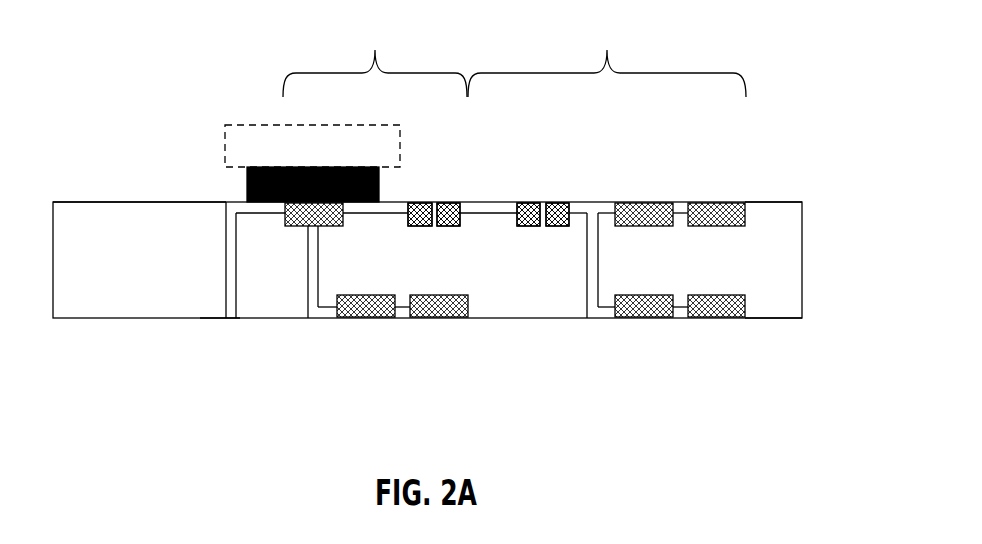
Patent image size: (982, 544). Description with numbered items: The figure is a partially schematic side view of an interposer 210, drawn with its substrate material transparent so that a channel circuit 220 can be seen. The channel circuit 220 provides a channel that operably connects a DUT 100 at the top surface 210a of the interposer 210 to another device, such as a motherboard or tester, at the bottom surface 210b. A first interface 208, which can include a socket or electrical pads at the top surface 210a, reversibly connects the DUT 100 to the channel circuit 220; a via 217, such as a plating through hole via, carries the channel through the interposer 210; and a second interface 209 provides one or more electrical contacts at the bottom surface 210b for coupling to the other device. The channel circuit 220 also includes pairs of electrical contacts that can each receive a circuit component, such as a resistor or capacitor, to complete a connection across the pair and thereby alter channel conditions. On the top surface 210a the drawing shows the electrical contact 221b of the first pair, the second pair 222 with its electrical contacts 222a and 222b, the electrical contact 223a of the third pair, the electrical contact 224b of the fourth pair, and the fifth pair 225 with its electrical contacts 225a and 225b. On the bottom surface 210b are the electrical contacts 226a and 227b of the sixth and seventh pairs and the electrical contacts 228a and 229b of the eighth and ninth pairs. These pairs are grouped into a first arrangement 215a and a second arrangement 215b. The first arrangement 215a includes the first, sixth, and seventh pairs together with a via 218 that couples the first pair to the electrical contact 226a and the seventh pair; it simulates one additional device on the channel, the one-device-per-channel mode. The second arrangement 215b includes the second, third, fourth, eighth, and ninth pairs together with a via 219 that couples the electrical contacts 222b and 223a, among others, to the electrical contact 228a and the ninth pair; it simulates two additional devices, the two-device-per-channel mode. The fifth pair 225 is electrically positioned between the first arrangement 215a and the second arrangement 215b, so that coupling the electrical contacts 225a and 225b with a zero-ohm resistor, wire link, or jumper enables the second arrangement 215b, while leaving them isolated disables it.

The DUT 100 is at (337, 160).
The first interface 208 is at (247, 187).
The second interface 209 is at (223, 328).
The interposer 210 is at (802, 255).
The top surface 210a is at (790, 202).
The bottom surface 210b is at (795, 318).
The first arrangement 215a is at (375, 57).
The second arrangement 215b is at (607, 57).
The via 217 is at (225, 265).
The via 218 is at (319, 258).
The via 219 is at (598, 277).
The channel circuit 220 is at (163, 230).
The electrical contact 221b is at (292, 228).
The second pair 222 is at (553, 226).
The electrical contact 222a is at (530, 202).
The electrical contact 222b is at (557, 202).
The electrical contact 223a is at (642, 202).
The electrical contact 224b is at (715, 202).
The fifth pair 225 is at (443, 202).
The electrical contact 225a is at (420, 226).
The electrical contact 225b is at (455, 226).
The electrical contact 226a is at (367, 318).
The electrical contact 227b is at (440, 318).
The electrical contact 228a is at (645, 318).
The electrical contact 229b is at (717, 318).